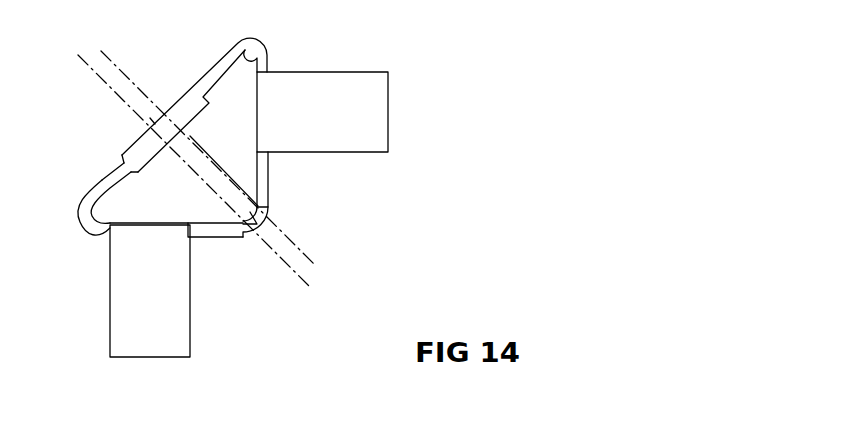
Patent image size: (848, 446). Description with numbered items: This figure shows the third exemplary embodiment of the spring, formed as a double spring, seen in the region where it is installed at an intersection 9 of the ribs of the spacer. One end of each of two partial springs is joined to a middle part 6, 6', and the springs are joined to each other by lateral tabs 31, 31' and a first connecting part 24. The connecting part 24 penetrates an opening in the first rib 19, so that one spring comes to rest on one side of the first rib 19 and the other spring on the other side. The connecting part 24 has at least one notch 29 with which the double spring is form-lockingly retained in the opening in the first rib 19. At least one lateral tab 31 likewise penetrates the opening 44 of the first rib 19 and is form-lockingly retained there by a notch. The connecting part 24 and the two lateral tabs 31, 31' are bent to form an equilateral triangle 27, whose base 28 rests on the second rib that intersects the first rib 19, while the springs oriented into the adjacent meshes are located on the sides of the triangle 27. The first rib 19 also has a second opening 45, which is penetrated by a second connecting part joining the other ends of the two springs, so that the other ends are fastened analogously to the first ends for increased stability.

The lateral tab 31 is at (194, 86).
The intersection 9 is at (160, 114).
The second opening 45 is at (152, 117).
The base 28 is at (122, 153).
The lateral tab 31' is at (75, 203).
The equilateral triangle 27 is at (198, 205).
The notch 29 is at (245, 232).
The middle part 6 is at (355, 112).
The first connecting part 24 is at (268, 182).
The opening 44 is at (270, 222).
The first rib 19 is at (302, 266).
The middle part 6' is at (123, 310).